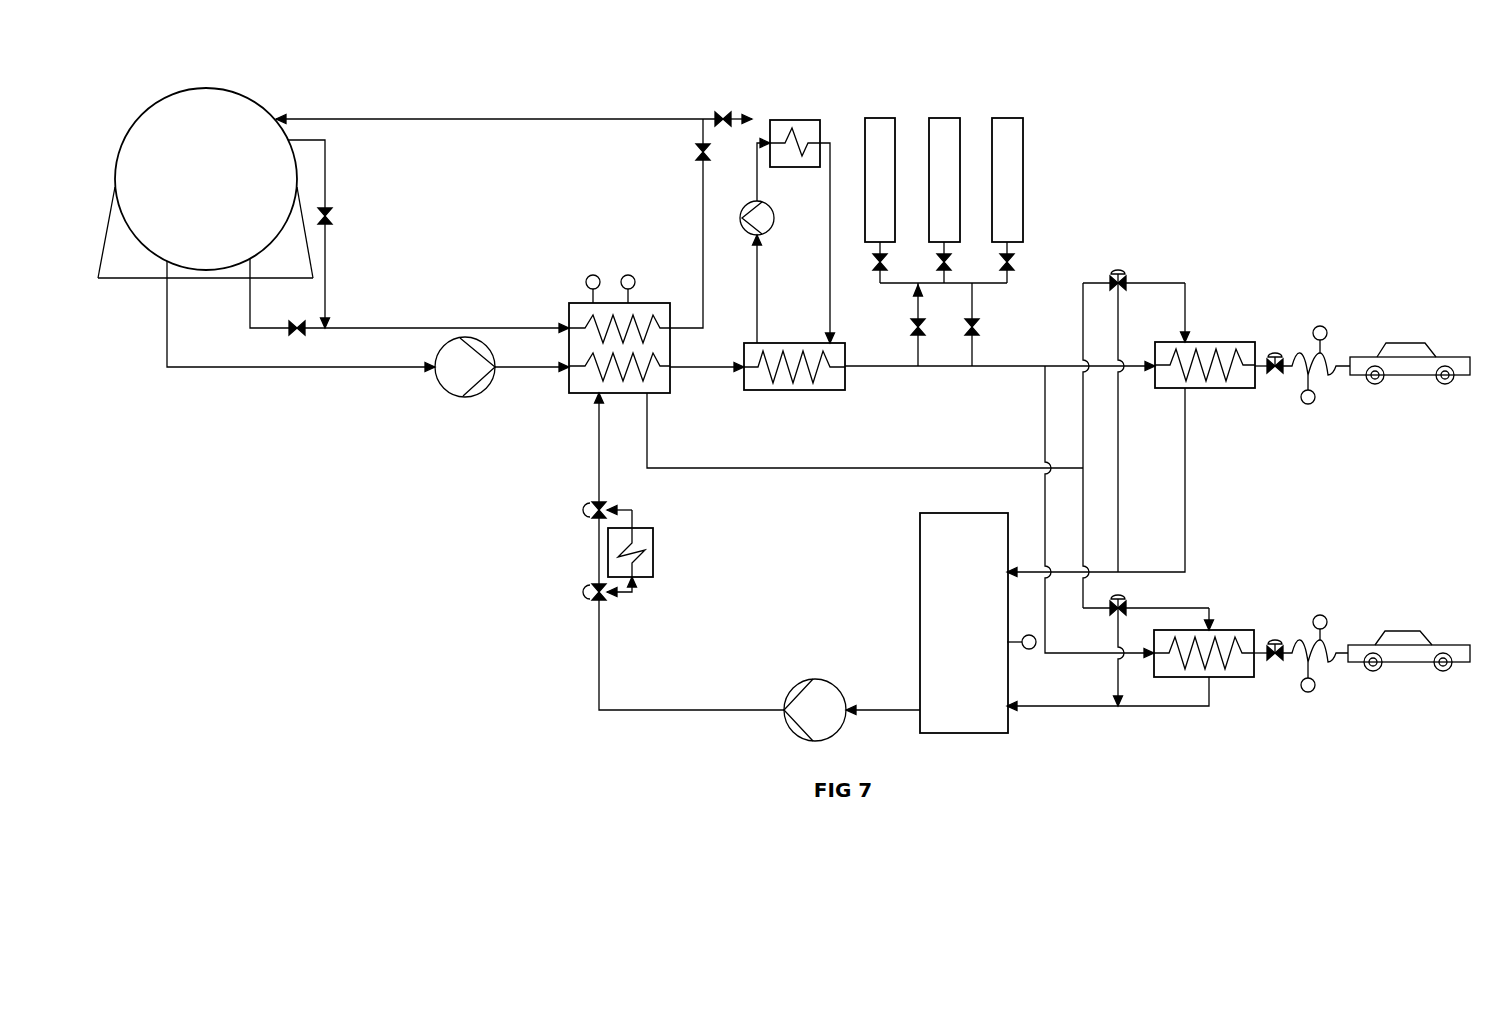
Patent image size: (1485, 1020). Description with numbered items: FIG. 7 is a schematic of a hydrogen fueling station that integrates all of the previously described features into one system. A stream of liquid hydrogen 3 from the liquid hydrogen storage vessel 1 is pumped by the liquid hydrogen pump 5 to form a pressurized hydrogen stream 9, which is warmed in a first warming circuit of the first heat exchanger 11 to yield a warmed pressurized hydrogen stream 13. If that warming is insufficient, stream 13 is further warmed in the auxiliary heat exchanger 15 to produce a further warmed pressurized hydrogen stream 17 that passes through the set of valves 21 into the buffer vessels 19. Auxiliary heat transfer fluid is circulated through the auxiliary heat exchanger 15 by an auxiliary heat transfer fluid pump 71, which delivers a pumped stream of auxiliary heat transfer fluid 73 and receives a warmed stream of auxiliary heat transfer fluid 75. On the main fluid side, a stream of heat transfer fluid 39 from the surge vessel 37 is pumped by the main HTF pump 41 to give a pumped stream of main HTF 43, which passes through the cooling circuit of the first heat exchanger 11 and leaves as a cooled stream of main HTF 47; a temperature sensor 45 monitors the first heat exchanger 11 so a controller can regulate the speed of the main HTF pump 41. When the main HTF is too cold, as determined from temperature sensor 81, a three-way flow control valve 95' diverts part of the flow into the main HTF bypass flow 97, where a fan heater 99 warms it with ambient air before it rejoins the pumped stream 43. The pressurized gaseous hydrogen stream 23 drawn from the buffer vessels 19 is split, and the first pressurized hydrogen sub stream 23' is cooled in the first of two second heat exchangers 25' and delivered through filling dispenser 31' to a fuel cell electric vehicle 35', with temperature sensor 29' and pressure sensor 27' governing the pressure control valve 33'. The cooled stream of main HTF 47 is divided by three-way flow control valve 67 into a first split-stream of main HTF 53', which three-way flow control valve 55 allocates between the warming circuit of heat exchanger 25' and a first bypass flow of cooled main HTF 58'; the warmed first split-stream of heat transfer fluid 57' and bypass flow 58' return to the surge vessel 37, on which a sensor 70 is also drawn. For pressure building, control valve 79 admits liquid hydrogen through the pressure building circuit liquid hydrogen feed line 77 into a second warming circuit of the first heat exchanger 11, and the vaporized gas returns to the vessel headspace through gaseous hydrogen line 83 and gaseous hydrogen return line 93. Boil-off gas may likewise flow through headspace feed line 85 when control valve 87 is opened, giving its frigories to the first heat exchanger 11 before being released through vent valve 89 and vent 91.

The liquid hydrogen storage vessel 1 is at (172, 122).
The liquid hydrogen feed line 3 is at (195, 370).
The liquid hydrogen pump 5 is at (455, 377).
The pressurized hydrogen stream 9 is at (517, 372).
The first heat exchanger 11 is at (658, 312).
The warmed pressurized hydrogen stream 13 is at (692, 370).
The auxiliary heat exchanger 15 is at (832, 378).
The further warmed pressurized hydrogen stream 17 is at (885, 368).
The buffer vessel 19 is at (883, 128).
The valve 21 is at (885, 258).
The pressurized gaseous hydrogen stream 23 is at (1008, 391).
The first pressurized hydrogen sub stream 23' is at (1093, 336).
The first of two second heat exchangers 25' is at (1205, 335).
The pressure sensor 27' is at (1293, 415).
The temperature sensor 29' is at (1342, 324).
The filling dispenser 31' is at (1337, 388).
The dispensing valve 33' is at (1267, 389).
The fuel cell electric vehicle 35' is at (1410, 384).
The surge vessel 37 is at (952, 713).
The stream of heat transfer fluid 39 is at (893, 710).
The main HTF pump 41 is at (812, 707).
The pumped stream of main HTF 43 is at (598, 617).
The temperature sensor 45 is at (633, 277).
The cooled stream of main HTF 47 is at (647, 435).
The first split-stream of main HTF 53' is at (1068, 375).
The three-way flow control valve 55 is at (1117, 267).
The warmed first split-stream of heat transfer fluid 57' is at (1125, 482).
The first bypass flow of cooled main HTF 58' is at (1144, 427).
The three-way flow control valve 67 is at (1120, 595).
The sensor 70 is at (1030, 651).
The auxiliary heat transfer fluid pump 71 is at (758, 213).
The pumped stream of auxiliary heat transfer fluid 73 is at (830, 210).
The warmed stream of auxiliary heat transfer fluid 75 is at (757, 288).
The pressure building circuit liquid hydrogen feed line 77 is at (265, 332).
The control valve 79 is at (293, 332).
The temperature sensor 81 is at (596, 280).
The gaseous hydrogen line 83 is at (703, 225).
The headspace feed line 85 is at (325, 160).
The control valve 87 is at (332, 210).
The vent valve 89 is at (698, 156).
The vent 91 is at (725, 114).
The gaseous hydrogen return line 93 is at (452, 120).
The 3-way flow control valve 95' is at (537, 604).
The main HTF bypass flow 97 is at (620, 597).
The fan heater 99 is at (647, 538).